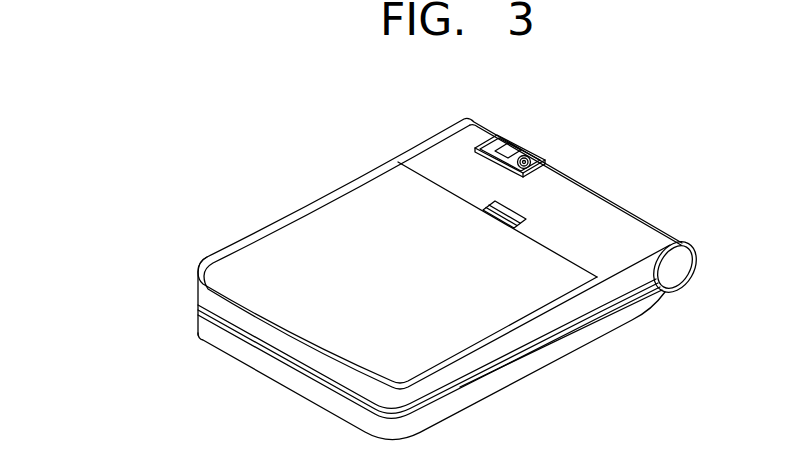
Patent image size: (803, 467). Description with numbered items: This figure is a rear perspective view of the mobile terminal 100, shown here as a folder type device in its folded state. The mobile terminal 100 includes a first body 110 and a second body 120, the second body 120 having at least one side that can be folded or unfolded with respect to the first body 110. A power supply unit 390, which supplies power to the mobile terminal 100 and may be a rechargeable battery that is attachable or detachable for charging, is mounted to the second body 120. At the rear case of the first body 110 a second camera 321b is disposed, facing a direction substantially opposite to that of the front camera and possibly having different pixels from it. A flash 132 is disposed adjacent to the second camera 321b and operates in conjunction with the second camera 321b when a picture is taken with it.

The mobile terminal 100 is at (612, 172).
The first body 110 is at (199, 282).
The second body 120 is at (198, 323).
The flash 132 is at (509, 141).
The second camera 321b is at (531, 157).
The power supply unit 390 is at (293, 240).